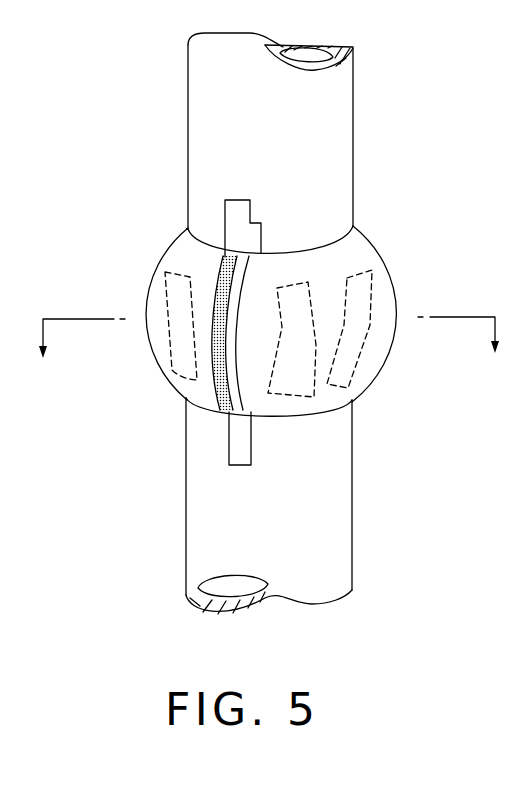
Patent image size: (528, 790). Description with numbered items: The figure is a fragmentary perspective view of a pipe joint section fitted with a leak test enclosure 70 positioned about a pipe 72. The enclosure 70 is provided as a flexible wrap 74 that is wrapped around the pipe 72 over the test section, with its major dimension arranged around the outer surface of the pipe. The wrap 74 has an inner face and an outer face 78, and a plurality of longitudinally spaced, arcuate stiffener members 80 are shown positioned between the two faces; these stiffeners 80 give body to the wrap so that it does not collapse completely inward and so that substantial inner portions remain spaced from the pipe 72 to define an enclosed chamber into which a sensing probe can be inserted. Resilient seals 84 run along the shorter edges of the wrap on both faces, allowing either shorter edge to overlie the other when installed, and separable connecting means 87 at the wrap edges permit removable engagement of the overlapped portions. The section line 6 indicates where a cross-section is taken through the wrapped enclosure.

The section line 6- 6 is at (272, 352).
The enclosure 70 is at (325, 314).
The pipe 72 is at (349, 162).
The flexible wrap 74 is at (398, 299).
The outer face 78 is at (172, 252).
The stiffener members 80 is at (164, 304).
The seals 84 is at (247, 394).
The separable connecting means 87 is at (221, 396).